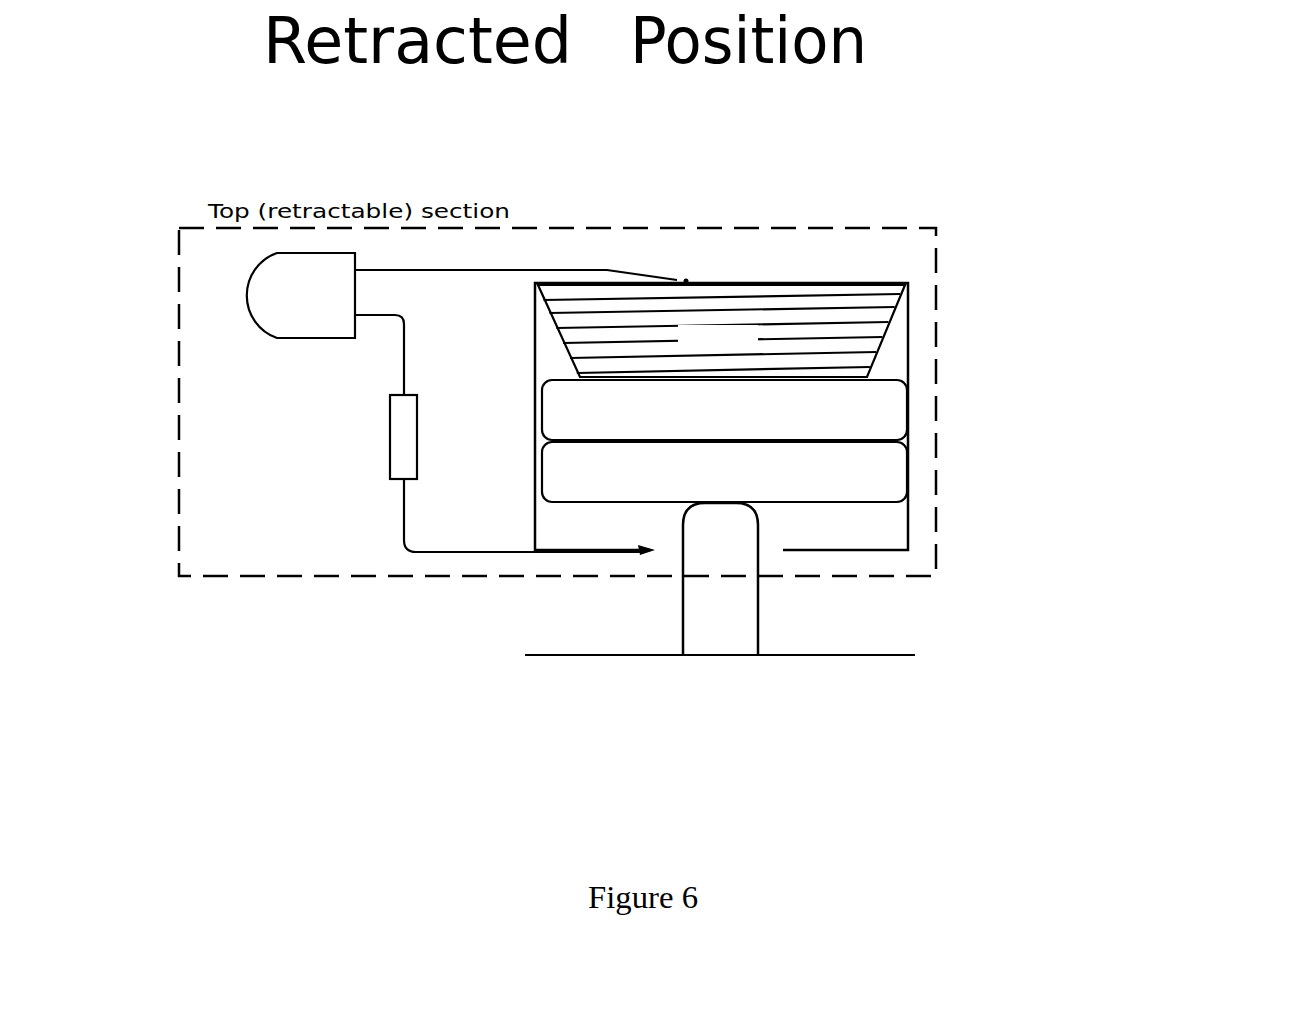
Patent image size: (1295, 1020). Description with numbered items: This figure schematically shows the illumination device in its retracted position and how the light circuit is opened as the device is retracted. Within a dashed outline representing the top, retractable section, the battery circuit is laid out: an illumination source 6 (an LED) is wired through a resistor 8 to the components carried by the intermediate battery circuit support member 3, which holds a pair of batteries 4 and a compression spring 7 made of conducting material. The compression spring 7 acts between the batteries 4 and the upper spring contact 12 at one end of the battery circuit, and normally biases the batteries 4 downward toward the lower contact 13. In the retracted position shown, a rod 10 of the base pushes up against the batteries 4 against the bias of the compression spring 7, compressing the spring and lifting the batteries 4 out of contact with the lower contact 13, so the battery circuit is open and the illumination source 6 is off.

The intermediate battery circuit support member 3 is at (908, 335).
The batteries 4 is at (908, 417).
The illumination source 6 is at (305, 313).
The compression spring 7 is at (860, 331).
The resistor 8 is at (403, 438).
The rod 10 is at (758, 612).
The upper spring contact 12 is at (853, 208).
The lower contact 13 is at (645, 567).